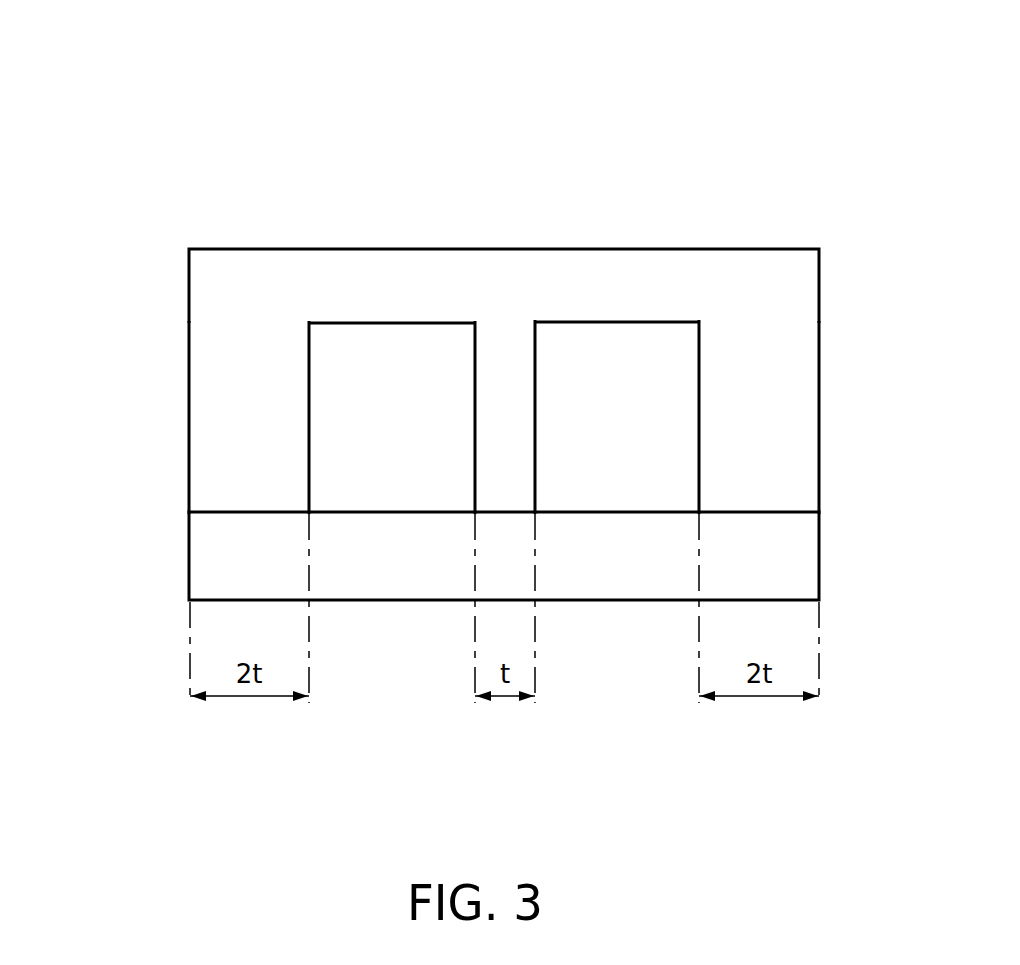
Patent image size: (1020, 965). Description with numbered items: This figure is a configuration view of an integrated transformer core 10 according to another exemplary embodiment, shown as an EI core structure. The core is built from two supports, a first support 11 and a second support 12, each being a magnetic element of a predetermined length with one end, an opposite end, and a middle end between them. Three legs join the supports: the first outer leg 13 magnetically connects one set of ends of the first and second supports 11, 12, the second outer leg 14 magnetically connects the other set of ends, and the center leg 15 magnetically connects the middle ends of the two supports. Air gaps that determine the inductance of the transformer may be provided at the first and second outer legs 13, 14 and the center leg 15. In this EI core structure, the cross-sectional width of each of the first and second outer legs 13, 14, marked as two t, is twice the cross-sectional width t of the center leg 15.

The magnetic core 10 is at (531, 43).
The first support 11 is at (492, 283).
The second support 12 is at (603, 568).
The first outer leg 13 is at (228, 437).
The second outer leg 14 is at (804, 439).
The center leg 15 is at (513, 452).